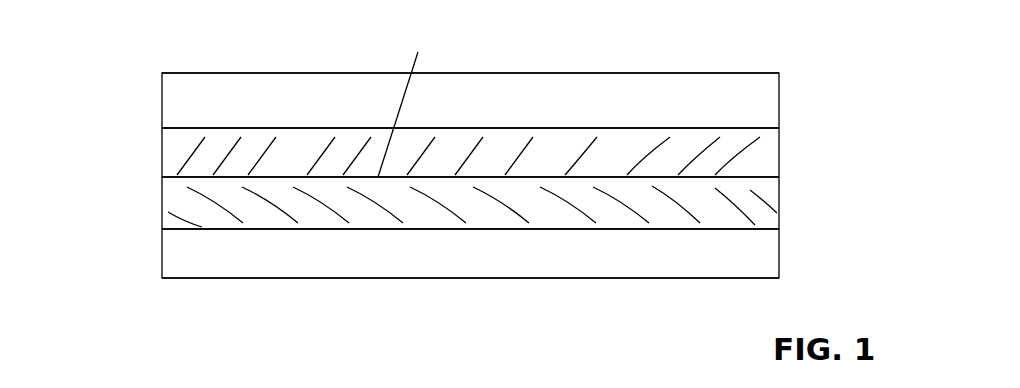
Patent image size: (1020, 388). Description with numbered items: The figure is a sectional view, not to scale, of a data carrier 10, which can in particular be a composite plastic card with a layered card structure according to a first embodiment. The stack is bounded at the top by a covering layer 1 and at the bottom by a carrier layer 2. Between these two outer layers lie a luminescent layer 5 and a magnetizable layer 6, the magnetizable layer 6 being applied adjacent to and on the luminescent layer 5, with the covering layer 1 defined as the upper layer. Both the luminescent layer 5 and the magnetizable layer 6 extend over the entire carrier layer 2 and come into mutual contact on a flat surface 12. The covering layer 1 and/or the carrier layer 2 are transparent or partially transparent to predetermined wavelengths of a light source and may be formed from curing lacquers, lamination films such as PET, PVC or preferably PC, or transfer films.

The data carrier 10 is at (150, 235).
The covering layer 1 is at (742, 102).
The magnetizable layer 6 is at (765, 162).
The flat surface 12 is at (406, 98).
The luminescent layer 5 is at (767, 207).
The carrier layer 2 is at (765, 263).